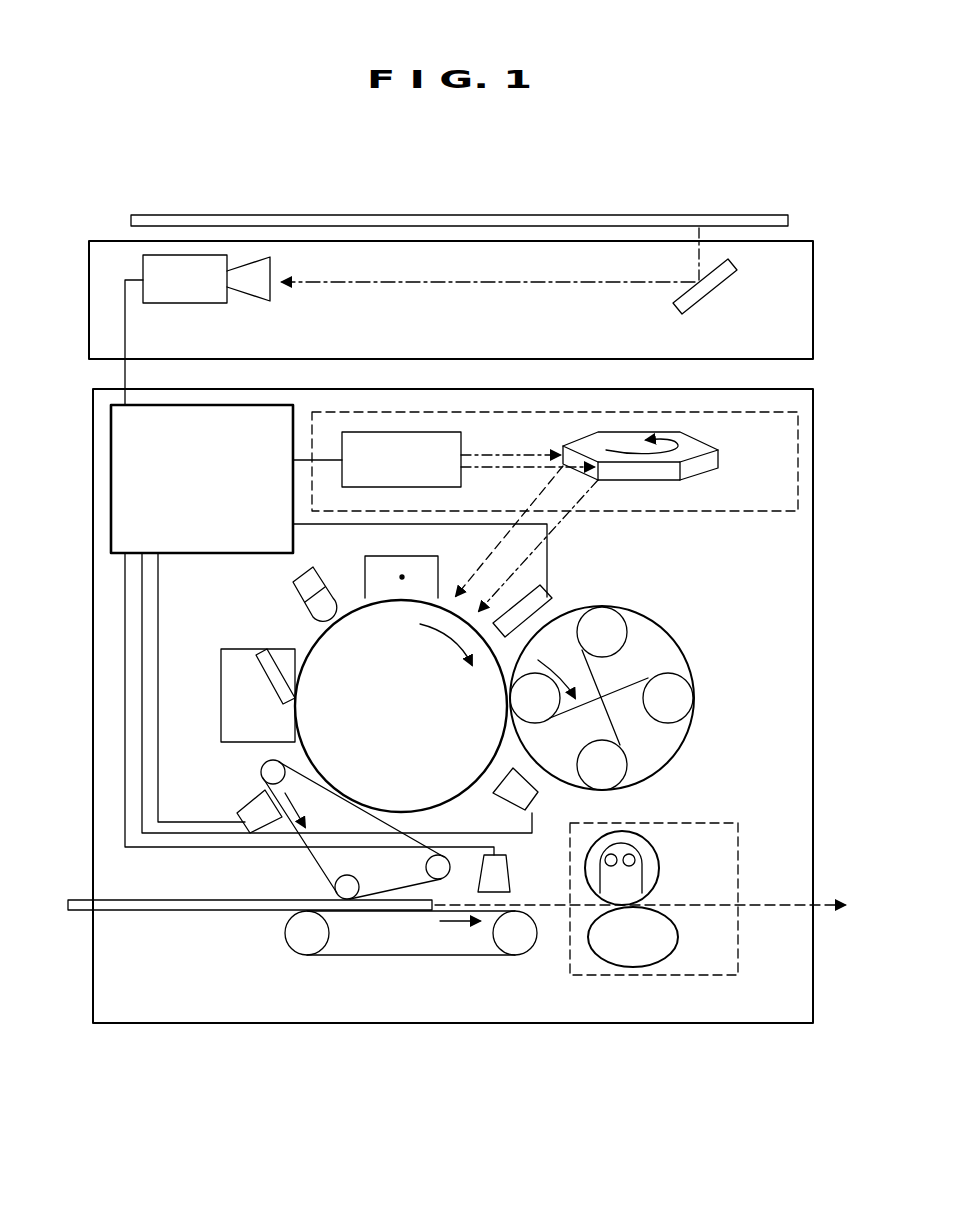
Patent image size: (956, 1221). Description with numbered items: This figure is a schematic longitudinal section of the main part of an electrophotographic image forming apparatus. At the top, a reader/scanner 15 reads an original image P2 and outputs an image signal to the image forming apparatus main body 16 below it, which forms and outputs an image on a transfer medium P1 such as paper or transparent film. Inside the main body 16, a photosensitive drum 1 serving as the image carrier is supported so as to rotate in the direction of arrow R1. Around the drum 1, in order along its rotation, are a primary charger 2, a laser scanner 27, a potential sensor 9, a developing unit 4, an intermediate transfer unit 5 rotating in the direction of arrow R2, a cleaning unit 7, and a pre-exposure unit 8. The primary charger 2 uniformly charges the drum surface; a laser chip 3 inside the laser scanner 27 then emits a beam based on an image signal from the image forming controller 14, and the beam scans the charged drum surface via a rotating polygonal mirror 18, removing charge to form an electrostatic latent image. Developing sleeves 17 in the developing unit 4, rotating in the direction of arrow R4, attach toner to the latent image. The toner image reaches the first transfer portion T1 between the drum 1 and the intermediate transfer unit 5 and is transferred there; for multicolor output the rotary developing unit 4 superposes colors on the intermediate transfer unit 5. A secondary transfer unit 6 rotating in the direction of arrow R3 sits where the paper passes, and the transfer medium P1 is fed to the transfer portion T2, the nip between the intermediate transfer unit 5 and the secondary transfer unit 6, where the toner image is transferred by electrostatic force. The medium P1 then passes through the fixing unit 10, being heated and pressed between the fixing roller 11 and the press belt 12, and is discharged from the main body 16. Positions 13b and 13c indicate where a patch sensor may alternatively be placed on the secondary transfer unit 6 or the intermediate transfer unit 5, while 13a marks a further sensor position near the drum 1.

The photosensitive drum 1 is at (315, 643).
The primary charger 2 is at (378, 556).
The laser chip 3 is at (461, 443).
The developing unit 4 is at (690, 652).
The intermediate transfer unit 5 is at (260, 770).
The secondary transfer unit 6 is at (405, 957).
The cleaning unit 7 is at (256, 676).
The pre-exposure unit 8 is at (296, 574).
The potential sensor 9 is at (553, 590).
The fixing unit 10 is at (740, 868).
The fixing roller 11 is at (655, 840).
The press belt 12 is at (672, 955).
The sensor 13a is at (536, 800).
The patch sensor position 13b is at (532, 876).
The patch sensor position 13c is at (246, 800).
The image forming controller 14 is at (203, 556).
The reader/scanner 15 is at (814, 300).
The image forming apparatus main body 16 is at (814, 455).
The developing sleeves 17 is at (676, 697).
The rotating polygonal mirror 18 is at (714, 455).
The laser scanner 27 is at (740, 513).
The transfer medium P1 is at (173, 913).
The original image P2 is at (566, 212).
The first transfer portion T1 is at (345, 795).
The transfer portion T2 is at (333, 897).
The rotational direction of photosensitive drum R1 is at (446, 649).
The rotational direction of intermediate transfer unit R2 is at (314, 812).
The rotational direction of secondary transfer unit R3 is at (460, 937).
The rotational direction of developing sleeves R4 is at (556, 667).